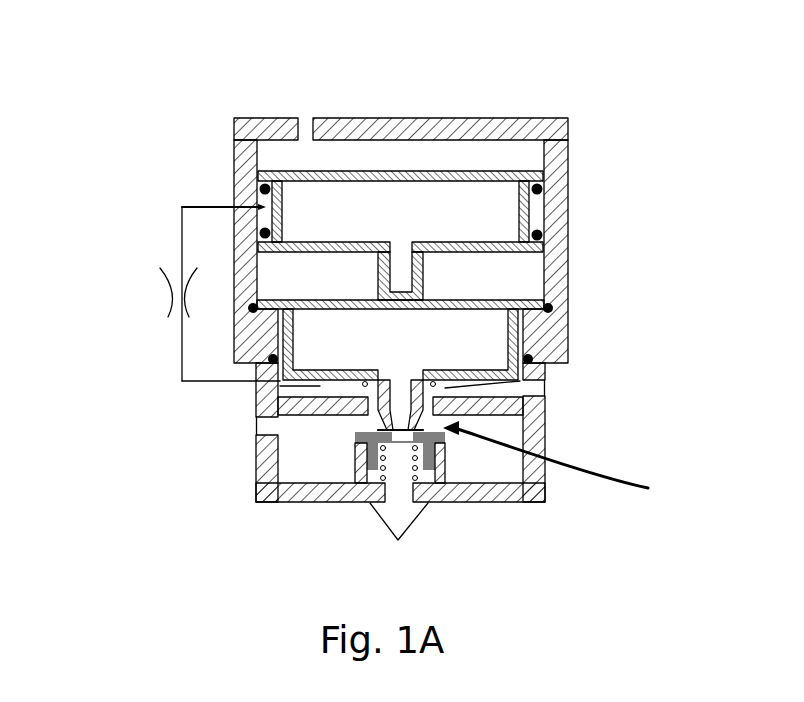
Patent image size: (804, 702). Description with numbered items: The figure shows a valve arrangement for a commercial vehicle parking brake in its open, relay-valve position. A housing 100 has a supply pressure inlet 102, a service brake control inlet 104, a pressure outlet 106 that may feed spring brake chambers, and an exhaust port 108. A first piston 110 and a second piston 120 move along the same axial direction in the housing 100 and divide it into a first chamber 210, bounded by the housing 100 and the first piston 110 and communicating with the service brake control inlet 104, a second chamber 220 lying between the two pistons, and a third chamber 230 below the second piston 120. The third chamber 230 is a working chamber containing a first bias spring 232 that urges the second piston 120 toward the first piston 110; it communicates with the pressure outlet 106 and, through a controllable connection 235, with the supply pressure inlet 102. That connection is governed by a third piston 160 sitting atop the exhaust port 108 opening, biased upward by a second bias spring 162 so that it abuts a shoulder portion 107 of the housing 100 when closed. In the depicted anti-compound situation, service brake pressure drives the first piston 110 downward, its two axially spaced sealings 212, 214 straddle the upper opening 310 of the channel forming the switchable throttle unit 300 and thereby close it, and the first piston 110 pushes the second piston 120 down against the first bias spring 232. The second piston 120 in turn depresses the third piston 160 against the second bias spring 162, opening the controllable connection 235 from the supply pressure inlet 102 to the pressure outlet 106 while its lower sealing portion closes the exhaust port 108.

The housing 100 is at (393, 323).
The supply pressure inlet 102 is at (355, 471).
The service brake control inlet 104 is at (310, 117).
The pressure outlet 106 is at (538, 387).
The shoulder portion 107 is at (345, 415).
The exhaust port 108 is at (397, 515).
The first piston 110 is at (397, 172).
The second piston 120 is at (262, 325).
The third piston 160 is at (430, 463).
The second bias spring 162 is at (415, 477).
The first chamber 210 is at (374, 205).
The sealing 212 is at (548, 188).
The sealing 214 is at (355, 205).
The second chamber 220 is at (233, 233).
The third chamber 230 is at (255, 395).
The first bias spring 232 is at (447, 388).
The controllable connection 235 is at (572, 463).
The switchable throttle unit 300 is at (173, 267).
The upper opening 310 is at (185, 207).